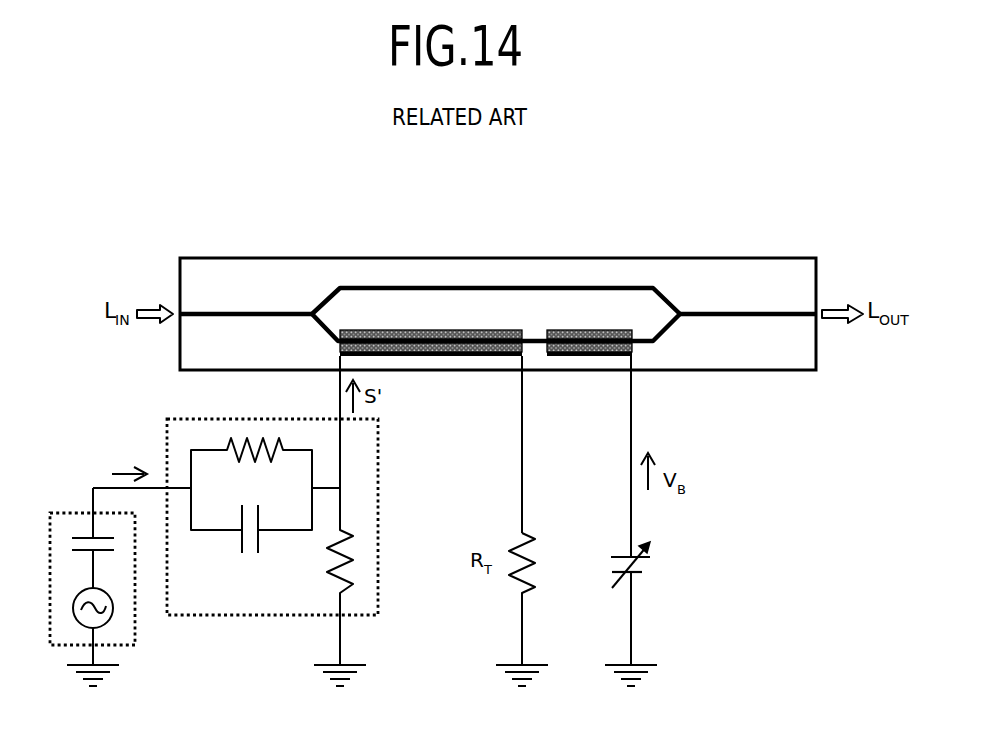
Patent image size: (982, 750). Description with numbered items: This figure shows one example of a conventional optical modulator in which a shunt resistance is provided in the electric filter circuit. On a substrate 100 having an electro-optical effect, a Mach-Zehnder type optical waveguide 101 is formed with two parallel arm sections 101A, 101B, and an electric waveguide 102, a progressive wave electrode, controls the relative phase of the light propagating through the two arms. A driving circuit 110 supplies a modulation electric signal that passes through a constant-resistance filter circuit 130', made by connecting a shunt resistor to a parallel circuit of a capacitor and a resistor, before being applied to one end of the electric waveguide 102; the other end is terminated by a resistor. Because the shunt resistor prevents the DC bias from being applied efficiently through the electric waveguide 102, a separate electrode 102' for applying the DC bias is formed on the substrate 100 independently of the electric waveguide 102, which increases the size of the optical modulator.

The substrate 100 is at (245, 258).
The optical waveguide 101 is at (207, 313).
The arm section 101A is at (367, 330).
The arm section 101B is at (407, 287).
The electric waveguide 102 is at (431, 367).
The electrode 102' is at (606, 379).
The driving circuit 110 is at (73, 514).
The constant-resistance filter circuit 130' is at (226, 535).